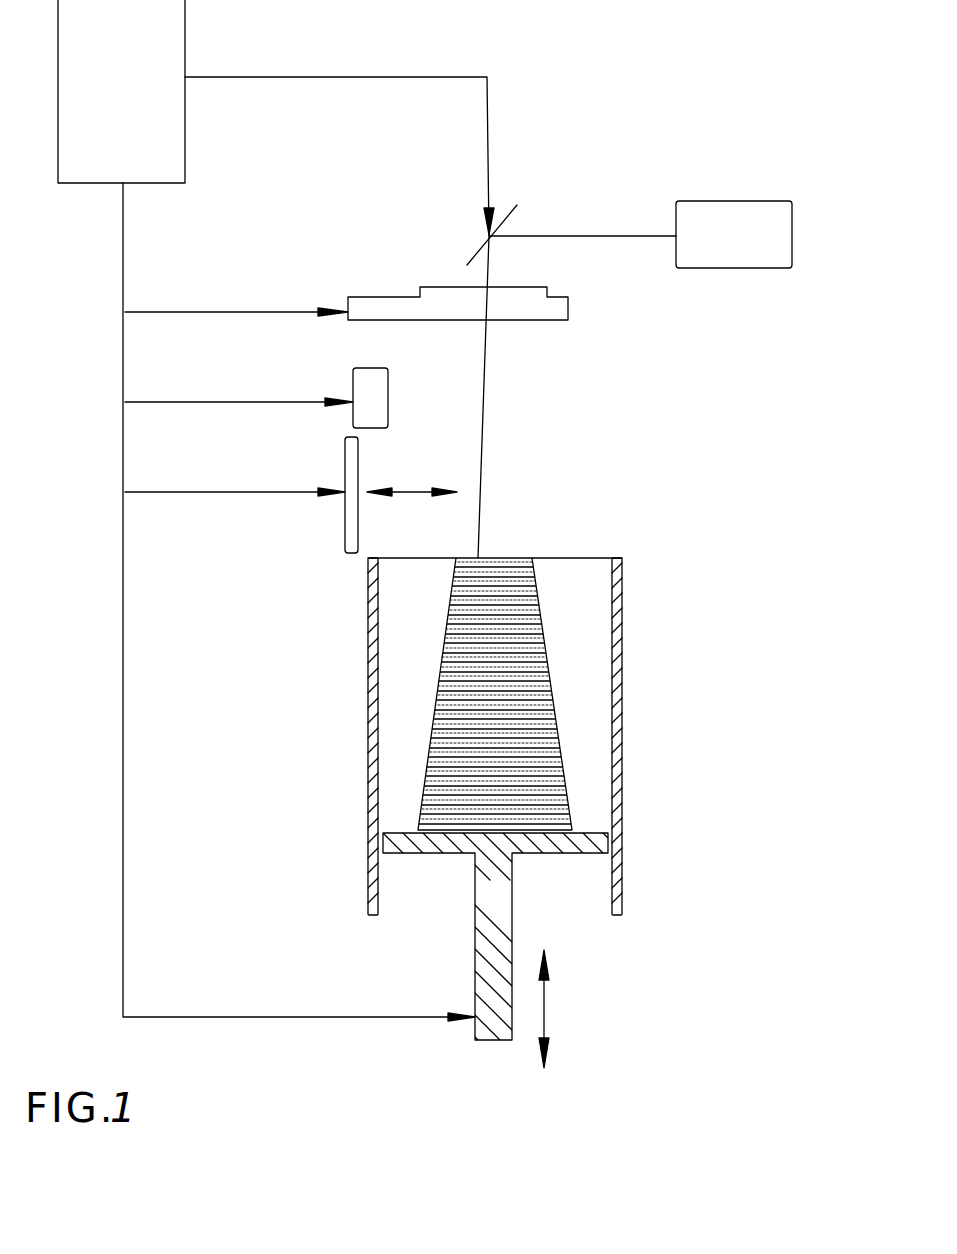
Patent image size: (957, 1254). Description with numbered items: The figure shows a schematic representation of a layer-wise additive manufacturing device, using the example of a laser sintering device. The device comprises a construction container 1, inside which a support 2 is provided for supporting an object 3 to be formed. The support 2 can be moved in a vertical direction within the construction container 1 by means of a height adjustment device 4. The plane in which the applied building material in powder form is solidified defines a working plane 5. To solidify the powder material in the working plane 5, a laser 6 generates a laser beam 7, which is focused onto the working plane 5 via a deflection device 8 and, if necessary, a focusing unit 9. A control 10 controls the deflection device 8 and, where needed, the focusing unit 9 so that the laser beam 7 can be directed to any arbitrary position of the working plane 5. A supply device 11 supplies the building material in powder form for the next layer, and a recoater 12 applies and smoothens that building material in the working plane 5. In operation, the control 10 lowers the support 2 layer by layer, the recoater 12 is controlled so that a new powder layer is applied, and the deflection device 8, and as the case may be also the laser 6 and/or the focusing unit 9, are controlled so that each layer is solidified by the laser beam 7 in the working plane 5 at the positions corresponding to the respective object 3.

The construction container 1 is at (618, 675).
The support 2 is at (587, 832).
The object 3 is at (435, 702).
The height adjustment device 4 is at (544, 1003).
The working plane 5 is at (583, 558).
The laser 6 is at (745, 201).
The laser beam 7 is at (623, 236).
The deflection device 8 is at (478, 252).
The focusing unit 9 is at (552, 320).
The control 10 is at (165, 53).
The supply device 11 is at (388, 402).
The recoater 12 is at (345, 465).